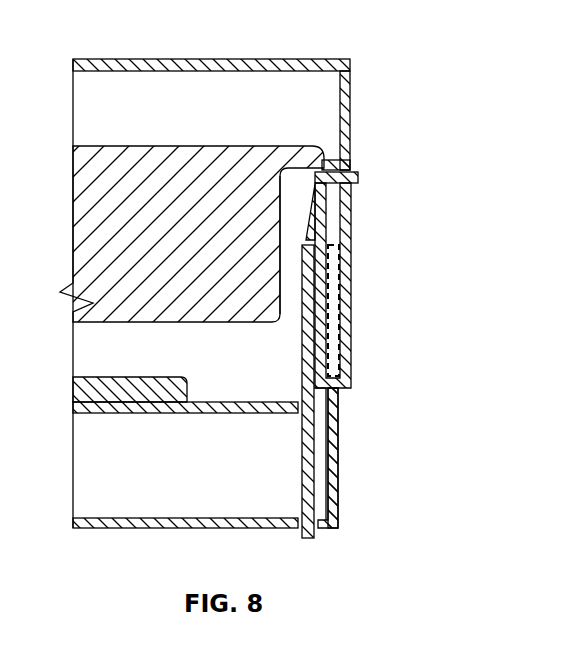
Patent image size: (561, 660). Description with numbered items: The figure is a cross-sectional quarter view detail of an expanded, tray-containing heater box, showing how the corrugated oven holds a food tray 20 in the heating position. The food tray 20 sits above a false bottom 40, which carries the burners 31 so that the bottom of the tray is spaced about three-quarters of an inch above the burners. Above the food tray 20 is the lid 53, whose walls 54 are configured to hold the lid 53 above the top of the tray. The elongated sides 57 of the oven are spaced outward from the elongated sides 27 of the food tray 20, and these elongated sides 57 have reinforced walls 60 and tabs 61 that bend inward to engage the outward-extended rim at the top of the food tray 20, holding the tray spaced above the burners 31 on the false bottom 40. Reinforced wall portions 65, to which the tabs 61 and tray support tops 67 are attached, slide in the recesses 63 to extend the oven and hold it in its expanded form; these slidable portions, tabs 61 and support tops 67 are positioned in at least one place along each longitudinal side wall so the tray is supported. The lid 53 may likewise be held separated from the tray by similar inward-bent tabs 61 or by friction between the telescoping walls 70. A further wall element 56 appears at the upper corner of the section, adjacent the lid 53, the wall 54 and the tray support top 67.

The food tray 20 is at (210, 259).
The elongated sides of the food tray 27 is at (283, 239).
The burners 31 is at (147, 380).
The false bottom 40 is at (160, 415).
The lid 53 is at (273, 58).
The walls of the lid 54 is at (350, 103).
The flange 56 is at (345, 160).
The elongated sides of the oven 57 is at (302, 468).
The reinforced walls 60 is at (338, 452).
The tabs 61 is at (300, 212).
The recesses 63 is at (338, 412).
The reinforced wall portions 65 is at (352, 262).
The tray support tops 67 is at (355, 172).
The telescoping walls 70 is at (350, 301).